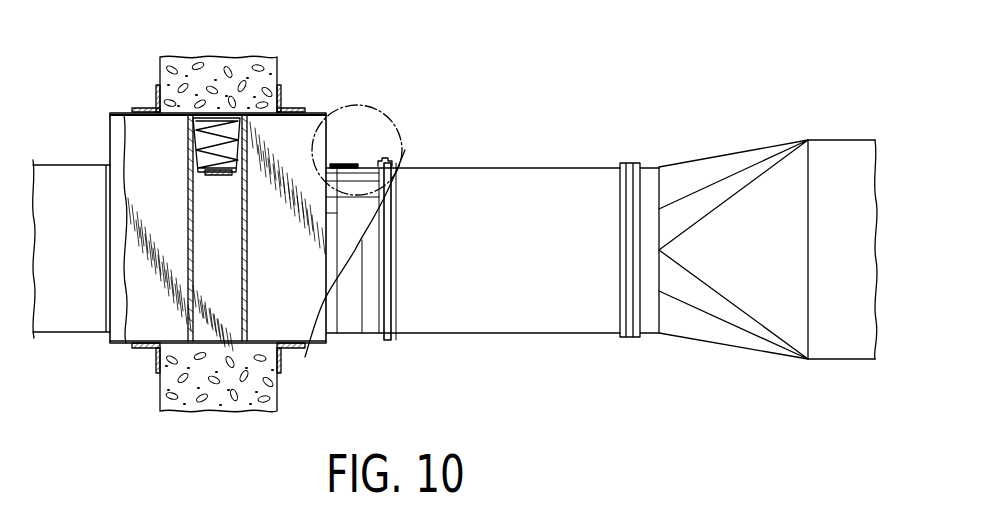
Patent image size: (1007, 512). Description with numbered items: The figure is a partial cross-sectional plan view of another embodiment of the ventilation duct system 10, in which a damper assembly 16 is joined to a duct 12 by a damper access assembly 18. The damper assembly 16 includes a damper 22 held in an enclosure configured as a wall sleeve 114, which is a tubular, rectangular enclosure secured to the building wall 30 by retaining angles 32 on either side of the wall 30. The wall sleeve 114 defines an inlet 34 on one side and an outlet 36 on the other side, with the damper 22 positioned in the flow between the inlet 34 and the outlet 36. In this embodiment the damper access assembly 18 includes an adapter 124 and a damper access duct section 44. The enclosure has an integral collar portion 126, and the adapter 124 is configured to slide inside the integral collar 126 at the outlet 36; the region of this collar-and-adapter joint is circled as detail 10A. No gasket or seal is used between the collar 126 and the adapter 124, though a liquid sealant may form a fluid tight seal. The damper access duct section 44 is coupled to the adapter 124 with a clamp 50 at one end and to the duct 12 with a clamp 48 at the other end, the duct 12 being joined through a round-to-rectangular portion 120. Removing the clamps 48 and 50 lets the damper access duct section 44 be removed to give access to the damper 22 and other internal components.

The ventilation duct system 10 is at (623, 80).
The detail view region 10A is at (362, 105).
The ventilation duct run 12 is at (825, 148).
The damper assembly 16 is at (126, 112).
The damper access assembly 18 is at (548, 160).
The damper 22 is at (188, 176).
The wall 30 is at (222, 72).
The retaining angle 32 is at (155, 85).
The inlet 34 is at (108, 236).
The outlet 36 is at (344, 250).
The damper access duct section 44 is at (485, 168).
The clamp 48 is at (630, 163).
The clamp 50 is at (405, 150).
The wall sleeve 114 is at (290, 350).
The round-to-rectangular portion 120 is at (718, 157).
The adapter 124 is at (372, 163).
The integral collar portion 126 is at (345, 163).